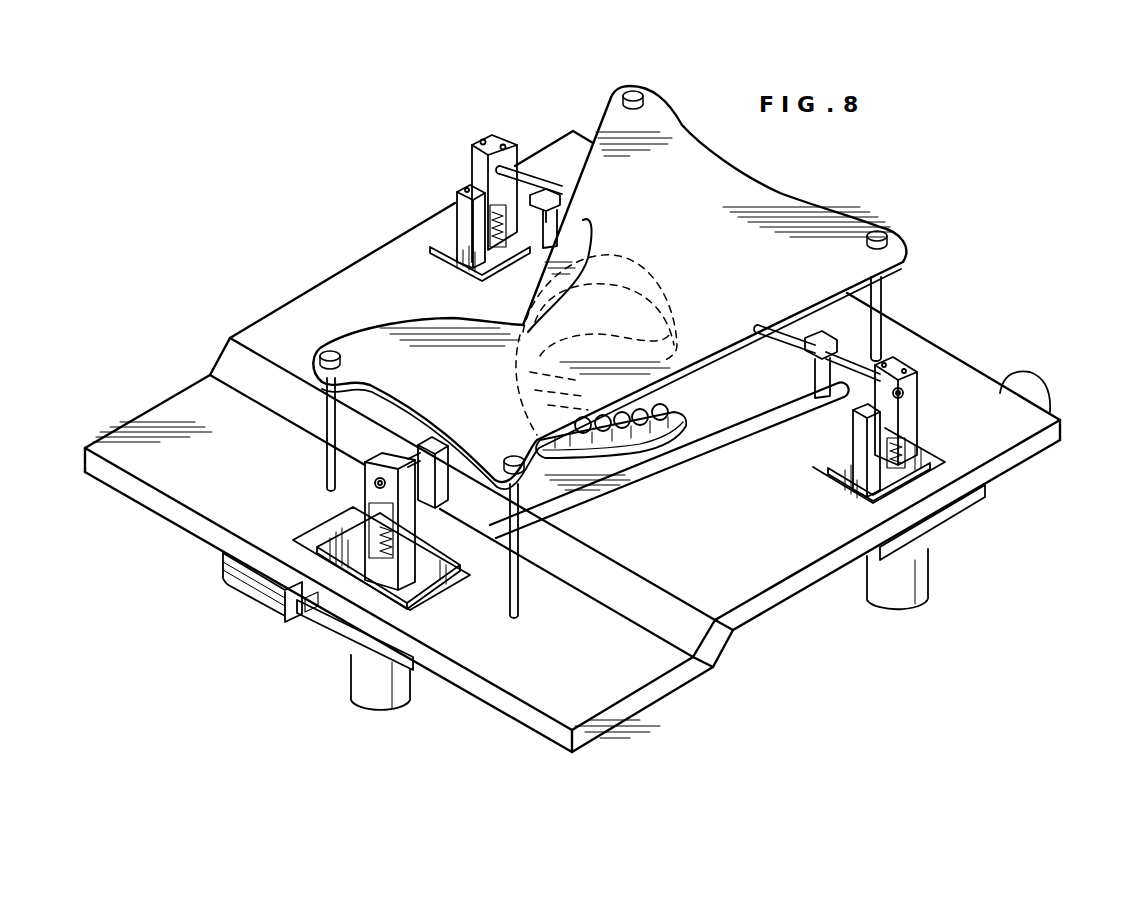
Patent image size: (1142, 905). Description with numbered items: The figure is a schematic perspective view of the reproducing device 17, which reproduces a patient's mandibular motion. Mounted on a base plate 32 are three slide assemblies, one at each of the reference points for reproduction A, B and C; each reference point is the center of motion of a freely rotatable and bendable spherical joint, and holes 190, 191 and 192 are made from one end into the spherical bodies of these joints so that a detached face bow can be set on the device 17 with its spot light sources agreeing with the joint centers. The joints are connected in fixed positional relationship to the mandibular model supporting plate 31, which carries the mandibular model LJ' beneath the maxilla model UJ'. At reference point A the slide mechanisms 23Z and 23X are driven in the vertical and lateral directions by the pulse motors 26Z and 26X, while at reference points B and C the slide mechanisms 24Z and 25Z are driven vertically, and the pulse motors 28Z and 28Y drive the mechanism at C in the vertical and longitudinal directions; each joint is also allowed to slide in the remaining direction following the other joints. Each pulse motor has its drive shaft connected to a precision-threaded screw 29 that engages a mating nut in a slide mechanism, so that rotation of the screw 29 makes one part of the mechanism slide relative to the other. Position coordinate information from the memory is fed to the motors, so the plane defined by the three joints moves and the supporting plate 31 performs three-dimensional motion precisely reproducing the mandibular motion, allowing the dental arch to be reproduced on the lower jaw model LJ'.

The reproducing device 17 is at (295, 648).
The base plate 32 is at (757, 580).
The mandibular model supporting plate 31 is at (718, 408).
The precision-threaded screw 29 is at (440, 242).
The hole 190 is at (376, 483).
The hole 191 is at (478, 148).
The hole 192 is at (907, 396).
The slide mechanism 23Z is at (416, 507).
The slide mechanism 23X is at (365, 600).
The slide mechanism 24Z is at (462, 190).
The slide mechanism 25Z is at (915, 470).
The pulse motor 26X is at (232, 592).
The pulse motor 26Z is at (395, 700).
The pulse motor 28Y is at (1012, 376).
The pulse motor 28Z is at (880, 597).
The reference point for reproduction A is at (365, 462).
The reference point for reproduction B is at (490, 140).
The reference point for reproduction C is at (905, 358).
The maxilla model UJ' is at (542, 327).
The mandibular model LJ' is at (611, 454).